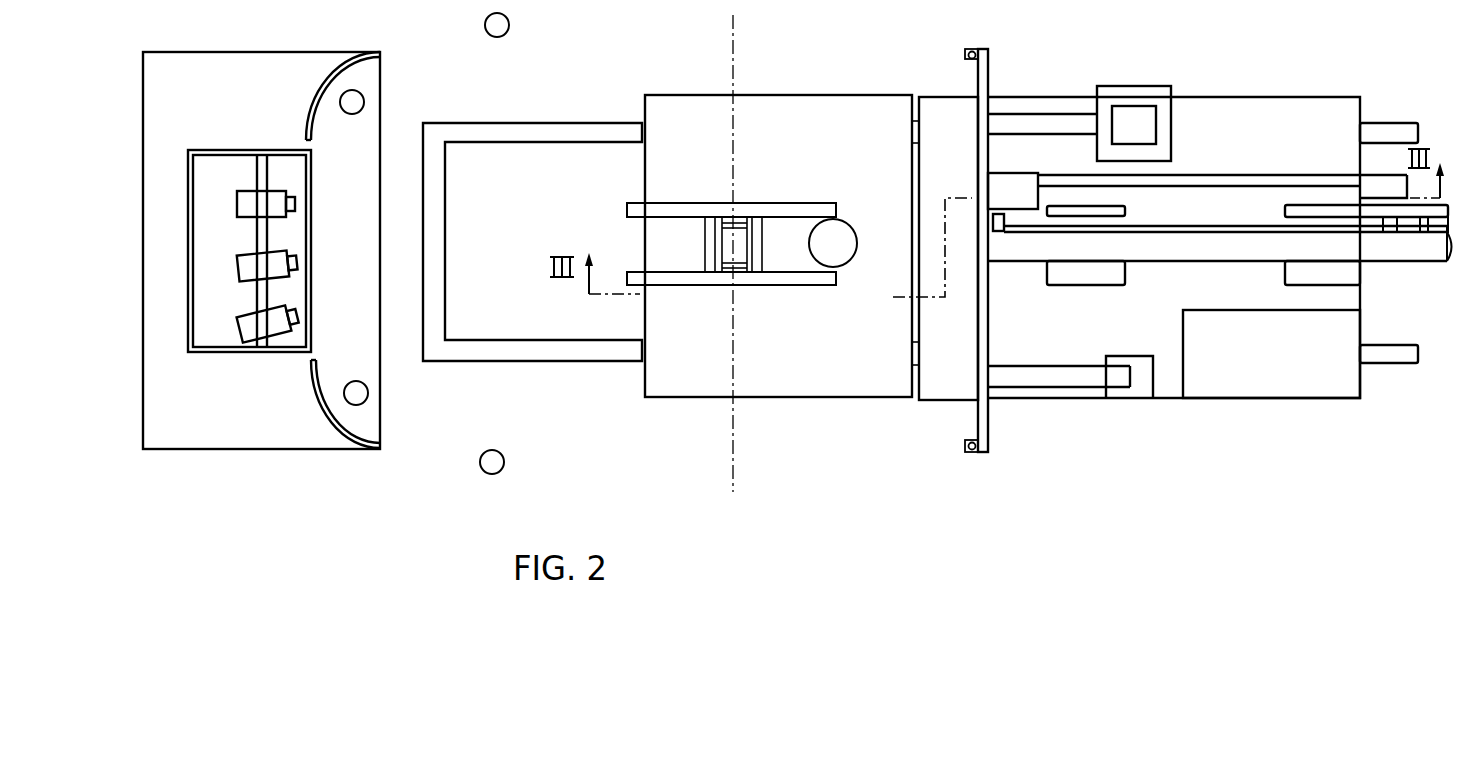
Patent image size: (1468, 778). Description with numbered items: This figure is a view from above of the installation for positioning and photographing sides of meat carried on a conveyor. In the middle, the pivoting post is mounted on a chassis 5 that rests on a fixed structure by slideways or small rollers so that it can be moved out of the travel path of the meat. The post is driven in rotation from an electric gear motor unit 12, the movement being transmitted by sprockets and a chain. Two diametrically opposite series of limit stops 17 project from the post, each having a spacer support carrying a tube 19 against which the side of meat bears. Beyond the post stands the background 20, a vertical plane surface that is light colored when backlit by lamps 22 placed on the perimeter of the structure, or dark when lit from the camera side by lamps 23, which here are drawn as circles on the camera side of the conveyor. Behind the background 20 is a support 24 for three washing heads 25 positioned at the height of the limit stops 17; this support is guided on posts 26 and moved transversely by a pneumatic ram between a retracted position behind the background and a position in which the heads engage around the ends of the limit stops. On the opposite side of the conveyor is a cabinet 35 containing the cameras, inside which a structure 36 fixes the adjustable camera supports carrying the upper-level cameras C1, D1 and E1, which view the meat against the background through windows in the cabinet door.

The chassis 5 is at (857, 366).
The electric gear motor unit 12 is at (846, 251).
The limit stops 17 is at (743, 202).
The tube 19 is at (789, 267).
The background 20 is at (989, 80).
The lamps 22 is at (968, 54).
The lamps 23 is at (360, 100).
The support 24 is at (1447, 234).
The washing heads 25 is at (1002, 187).
The posts 26 is at (1190, 224).
The cabinet 35 is at (322, 170).
The structure 36 is at (268, 301).
The camera E1 is at (250, 202).
The camera D1 is at (250, 260).
The camera C1 is at (252, 320).